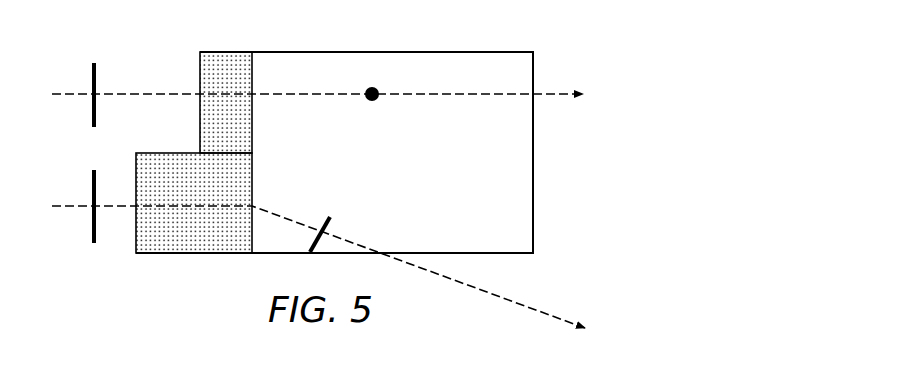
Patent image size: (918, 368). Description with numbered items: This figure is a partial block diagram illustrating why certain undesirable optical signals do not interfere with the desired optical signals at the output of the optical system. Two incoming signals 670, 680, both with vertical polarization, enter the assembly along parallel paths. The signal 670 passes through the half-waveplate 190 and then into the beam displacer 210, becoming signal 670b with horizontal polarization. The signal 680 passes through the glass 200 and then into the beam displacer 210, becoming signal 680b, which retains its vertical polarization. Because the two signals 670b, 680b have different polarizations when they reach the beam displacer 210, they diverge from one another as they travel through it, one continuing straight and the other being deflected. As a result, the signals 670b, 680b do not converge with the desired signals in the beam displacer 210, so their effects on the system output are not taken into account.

The half-waveplate 190 is at (224, 57).
The glass 200 is at (195, 245).
The beam displacer 210 is at (465, 58).
The signal 670 is at (92, 78).
The signal 680 is at (92, 226).
The signal 670b is at (372, 101).
The signal 680b is at (320, 215).